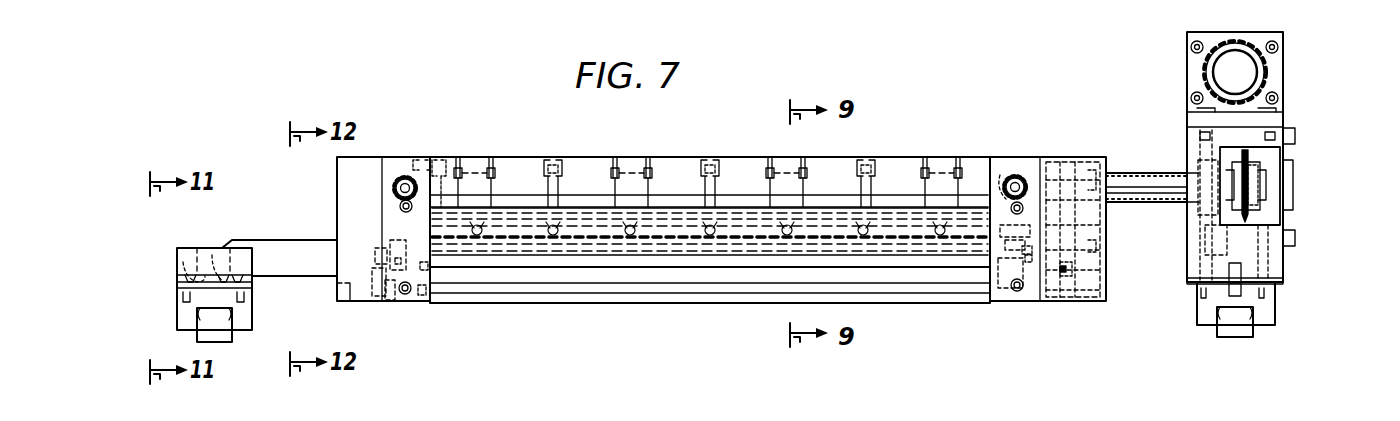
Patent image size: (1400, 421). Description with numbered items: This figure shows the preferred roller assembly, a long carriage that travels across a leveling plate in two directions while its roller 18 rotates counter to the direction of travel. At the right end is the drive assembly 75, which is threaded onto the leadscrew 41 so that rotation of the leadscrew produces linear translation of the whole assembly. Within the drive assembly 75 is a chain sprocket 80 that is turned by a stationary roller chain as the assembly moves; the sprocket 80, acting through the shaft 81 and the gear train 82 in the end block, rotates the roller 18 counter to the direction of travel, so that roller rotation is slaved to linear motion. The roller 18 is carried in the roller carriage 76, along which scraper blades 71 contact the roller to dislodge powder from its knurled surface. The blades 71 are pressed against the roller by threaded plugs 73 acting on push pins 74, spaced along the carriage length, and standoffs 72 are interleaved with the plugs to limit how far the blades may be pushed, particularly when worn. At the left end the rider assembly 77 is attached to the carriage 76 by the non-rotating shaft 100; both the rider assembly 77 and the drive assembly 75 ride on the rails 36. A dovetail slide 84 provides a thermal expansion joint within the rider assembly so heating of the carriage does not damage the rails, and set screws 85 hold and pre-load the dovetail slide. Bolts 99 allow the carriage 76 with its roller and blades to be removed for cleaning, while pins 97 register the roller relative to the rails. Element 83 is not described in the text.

The roller 18 is at (710, 230).
The rails 36 is at (230, 340).
The leadscrew 41 is at (1205, 70).
The scraper blades 71 is at (912, 256).
The standoffs 72 is at (705, 156).
The threaded plugs 73 is at (622, 156).
The push pins 74 is at (654, 186).
The drive assembly 75 is at (1256, 174).
The roller carriage 76 is at (709, 154).
The rider assembly 77 is at (254, 304).
The chain sprocket 80 is at (1230, 174).
The shaft 81 is at (1148, 204).
The gear train 82 is at (1052, 157).
The bearing 83 is at (1196, 80).
The dovetail slide 84 is at (226, 262).
The set screws 85 is at (184, 262).
The pins 97 is at (407, 175).
The bolts 99 is at (396, 207).
The non-rotating shaft 100 is at (297, 240).